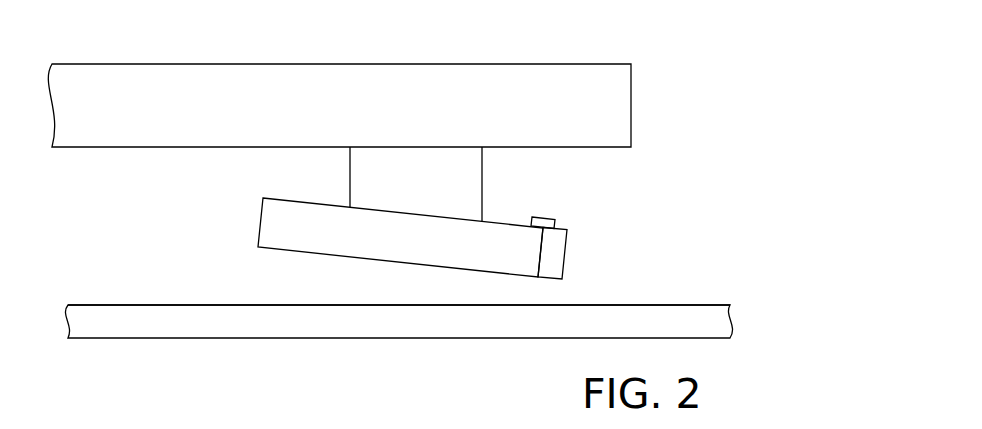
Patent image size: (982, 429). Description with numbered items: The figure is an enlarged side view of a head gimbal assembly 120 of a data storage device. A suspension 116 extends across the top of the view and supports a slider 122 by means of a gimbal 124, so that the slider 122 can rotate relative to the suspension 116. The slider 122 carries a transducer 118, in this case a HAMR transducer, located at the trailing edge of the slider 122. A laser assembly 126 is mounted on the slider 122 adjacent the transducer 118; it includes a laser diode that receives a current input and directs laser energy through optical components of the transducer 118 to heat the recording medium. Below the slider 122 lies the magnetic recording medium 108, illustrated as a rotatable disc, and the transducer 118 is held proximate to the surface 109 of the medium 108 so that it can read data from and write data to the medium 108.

The magnetic recording medium 108 is at (605, 327).
The surface of medium 109 is at (157, 303).
The suspension 116 is at (398, 64).
The transducer 118 is at (555, 252).
The head gimbal assembly 120 is at (481, 172).
The slider 122 is at (325, 215).
The gimbal 124 is at (447, 185).
The laser assembly 126 is at (569, 212).